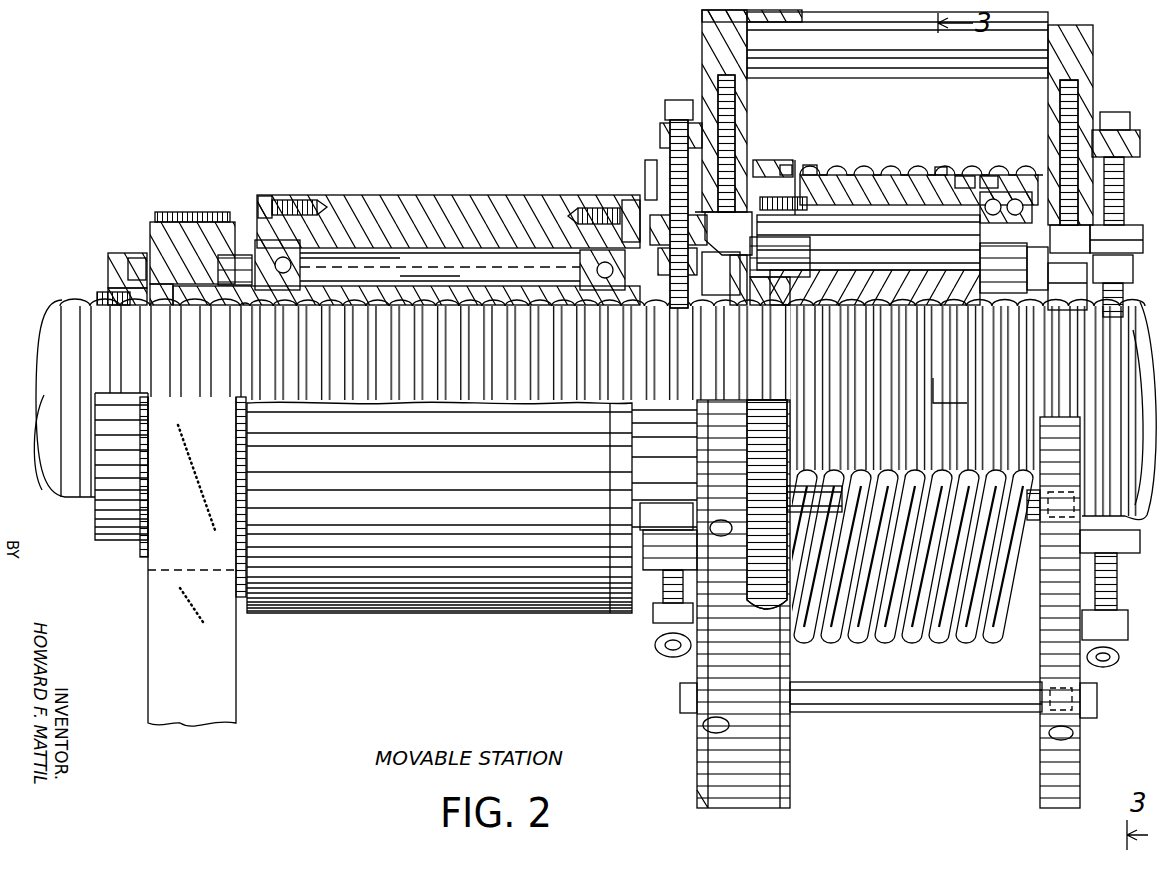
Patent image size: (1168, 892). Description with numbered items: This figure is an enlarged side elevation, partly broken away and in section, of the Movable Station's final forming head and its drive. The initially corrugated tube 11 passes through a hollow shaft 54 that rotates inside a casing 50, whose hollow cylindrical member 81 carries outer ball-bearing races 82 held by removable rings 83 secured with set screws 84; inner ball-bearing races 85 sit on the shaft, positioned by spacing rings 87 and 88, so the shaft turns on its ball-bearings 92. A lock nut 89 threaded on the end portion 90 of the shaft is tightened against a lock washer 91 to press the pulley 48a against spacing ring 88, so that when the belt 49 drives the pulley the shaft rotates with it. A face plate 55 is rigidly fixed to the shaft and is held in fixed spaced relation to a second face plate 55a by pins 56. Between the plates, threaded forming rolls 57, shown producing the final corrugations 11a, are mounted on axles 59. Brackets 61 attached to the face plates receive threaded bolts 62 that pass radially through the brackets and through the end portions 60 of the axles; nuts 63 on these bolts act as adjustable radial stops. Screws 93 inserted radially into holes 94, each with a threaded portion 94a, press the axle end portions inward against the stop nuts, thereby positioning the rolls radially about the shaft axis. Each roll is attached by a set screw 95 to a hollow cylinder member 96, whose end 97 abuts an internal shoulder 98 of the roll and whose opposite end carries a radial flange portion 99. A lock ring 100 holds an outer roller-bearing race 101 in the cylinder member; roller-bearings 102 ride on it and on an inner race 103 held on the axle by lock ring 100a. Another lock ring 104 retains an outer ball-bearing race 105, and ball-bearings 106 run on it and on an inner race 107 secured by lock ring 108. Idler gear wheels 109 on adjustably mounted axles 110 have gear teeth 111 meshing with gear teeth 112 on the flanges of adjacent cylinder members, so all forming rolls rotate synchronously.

The initially corrugated tube 11 is at (38, 408).
The final corrugations 11a is at (62, 303).
The pulley 48a is at (150, 240).
The belt 49 is at (150, 640).
The casing 50 is at (346, 606).
The hollow shaft 54 is at (480, 260).
The face plate 55 is at (722, 810).
The face plate 55a is at (1060, 810).
The pin 56 is at (823, 78).
The threaded forming roll 57 is at (965, 168).
The axle 59 is at (1010, 198).
The end portion of axle 60 is at (654, 216).
The bracket 61 is at (665, 112).
The threaded bolt 62 is at (662, 160).
The nut 63 is at (897, 286).
The hollow cylindrical member 81 is at (372, 197).
The outer ball-bearing race 82 is at (292, 247).
The removable ring 83 is at (265, 196).
The set screw 84 is at (270, 200).
The inner ball-bearing race 85 is at (350, 268).
The spacing ring 87 is at (405, 260).
The spacing ring 88 is at (236, 254).
The lock nut 89 is at (114, 268).
The end portion of hollow shaft 90 is at (100, 296).
The lock washer 91 is at (138, 258).
The ball-bearings 92 is at (580, 268).
The screw 93 is at (718, 87).
The hole 94 is at (705, 33).
The threaded portion of hole 94a is at (655, 178).
The set screw 95 is at (895, 172).
The hollow cylinder member 96 is at (862, 172).
The end of hollow cylinder member 97 is at (950, 172).
The internal shoulder 98 is at (990, 168).
The radial flange portion 99 is at (792, 165).
The lock ring 100 is at (775, 155).
The lock ring 100a is at (757, 235).
The outer roller-bearing race 101 is at (815, 172).
The roller-bearings 102 is at (800, 222).
The inner race 103 is at (790, 212).
The lock ring 104 is at (1032, 193).
The outer ball-bearing race 105 is at (1028, 190).
The ball-bearings 106 is at (1027, 265).
The inner race 107 is at (1025, 228).
The lock ring 108 is at (1050, 232).
The idler gear wheel 109 is at (720, 425).
The axle 110 is at (795, 488).
The gear teeth 111 is at (720, 470).
The gear teeth 112 is at (786, 170).